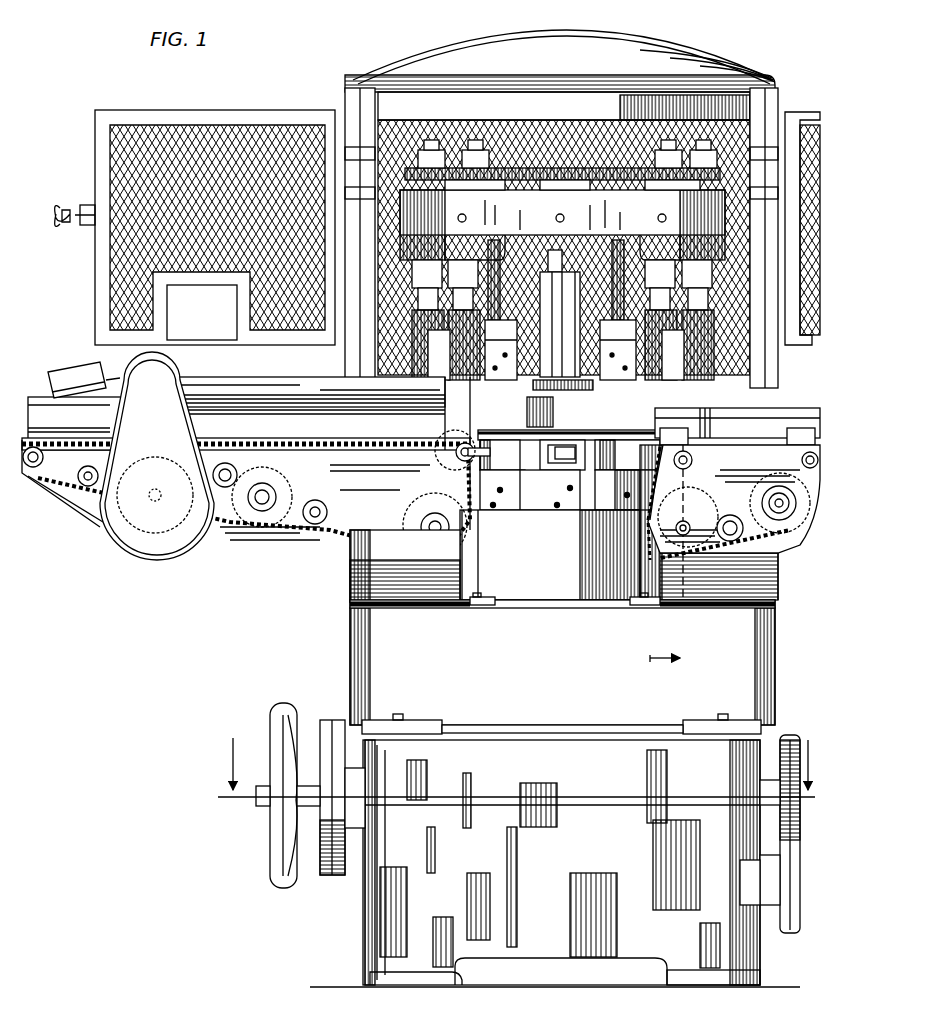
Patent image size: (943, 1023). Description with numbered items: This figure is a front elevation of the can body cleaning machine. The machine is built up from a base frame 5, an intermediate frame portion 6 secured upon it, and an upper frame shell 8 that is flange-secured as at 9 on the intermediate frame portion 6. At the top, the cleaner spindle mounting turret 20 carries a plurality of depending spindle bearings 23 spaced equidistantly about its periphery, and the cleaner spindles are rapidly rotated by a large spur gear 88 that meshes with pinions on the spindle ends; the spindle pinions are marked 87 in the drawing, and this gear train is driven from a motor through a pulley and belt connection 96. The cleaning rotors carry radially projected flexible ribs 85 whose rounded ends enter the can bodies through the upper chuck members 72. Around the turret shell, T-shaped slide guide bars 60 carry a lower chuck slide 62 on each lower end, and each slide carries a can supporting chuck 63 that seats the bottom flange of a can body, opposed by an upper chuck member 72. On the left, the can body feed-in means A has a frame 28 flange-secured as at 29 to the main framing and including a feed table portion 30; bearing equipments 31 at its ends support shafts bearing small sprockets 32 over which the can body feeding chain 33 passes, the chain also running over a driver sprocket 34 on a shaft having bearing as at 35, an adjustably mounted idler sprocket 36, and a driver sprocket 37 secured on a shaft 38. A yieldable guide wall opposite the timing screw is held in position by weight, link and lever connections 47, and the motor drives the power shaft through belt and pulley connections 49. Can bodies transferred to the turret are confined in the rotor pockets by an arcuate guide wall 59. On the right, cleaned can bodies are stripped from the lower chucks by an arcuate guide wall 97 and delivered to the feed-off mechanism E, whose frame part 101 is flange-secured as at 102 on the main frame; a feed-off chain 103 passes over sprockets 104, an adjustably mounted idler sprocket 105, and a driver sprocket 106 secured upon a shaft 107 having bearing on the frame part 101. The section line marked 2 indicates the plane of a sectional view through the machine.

The base frame 5 is at (385, 935).
The intermediate frame portion 6 is at (505, 775).
The upper frame shell 8 is at (355, 625).
The flange securement 9 is at (420, 727).
The section line 2- 2 is at (516, 779).
The cleaner spindle mounting turret 20 is at (660, 185).
The spindle bearings 23 is at (690, 255).
The frame 28 is at (375, 567).
The flange securement 29 is at (482, 602).
The feed table portion 30 is at (255, 440).
The bearing equipments 31 is at (33, 447).
The small sprockets 32 is at (75, 470).
The can body feeding chain 33 is at (345, 425).
The driver sprocket 34 is at (415, 518).
The bearing 35 is at (448, 532).
The idler sprocket 36 is at (262, 522).
The driver sprocket 37 is at (170, 450).
The shaft 38 is at (145, 510).
The weight, link and lever connections 47 is at (78, 362).
The belt and pulley connections 49 is at (330, 836).
The arcuate guide wall 59 is at (452, 450).
The T-shaped slide guide bars 60 is at (615, 275).
The lower chuck slide 62 is at (518, 368).
The can supporting chuck 63 is at (575, 468).
The upper chuck member 72 is at (548, 388).
The flexible ribs 85 is at (555, 325).
The nuts 87 is at (440, 165).
The spur gear 88 is at (545, 165).
The pulley and belt connection 96 is at (790, 735).
The arcuate guide wall 97 is at (560, 520).
The frame part 101 is at (750, 590).
The flange securement 102 is at (655, 645).
The feed-off chain 103 is at (755, 450).
The sprockets 104 is at (725, 440).
The idler sprocket 105 is at (790, 548).
The driver sprocket 106 is at (655, 572).
The shaft 107 is at (690, 555).
The feed-off mechanism E is at (795, 542).
The can body feed-in means A is at (222, 548).